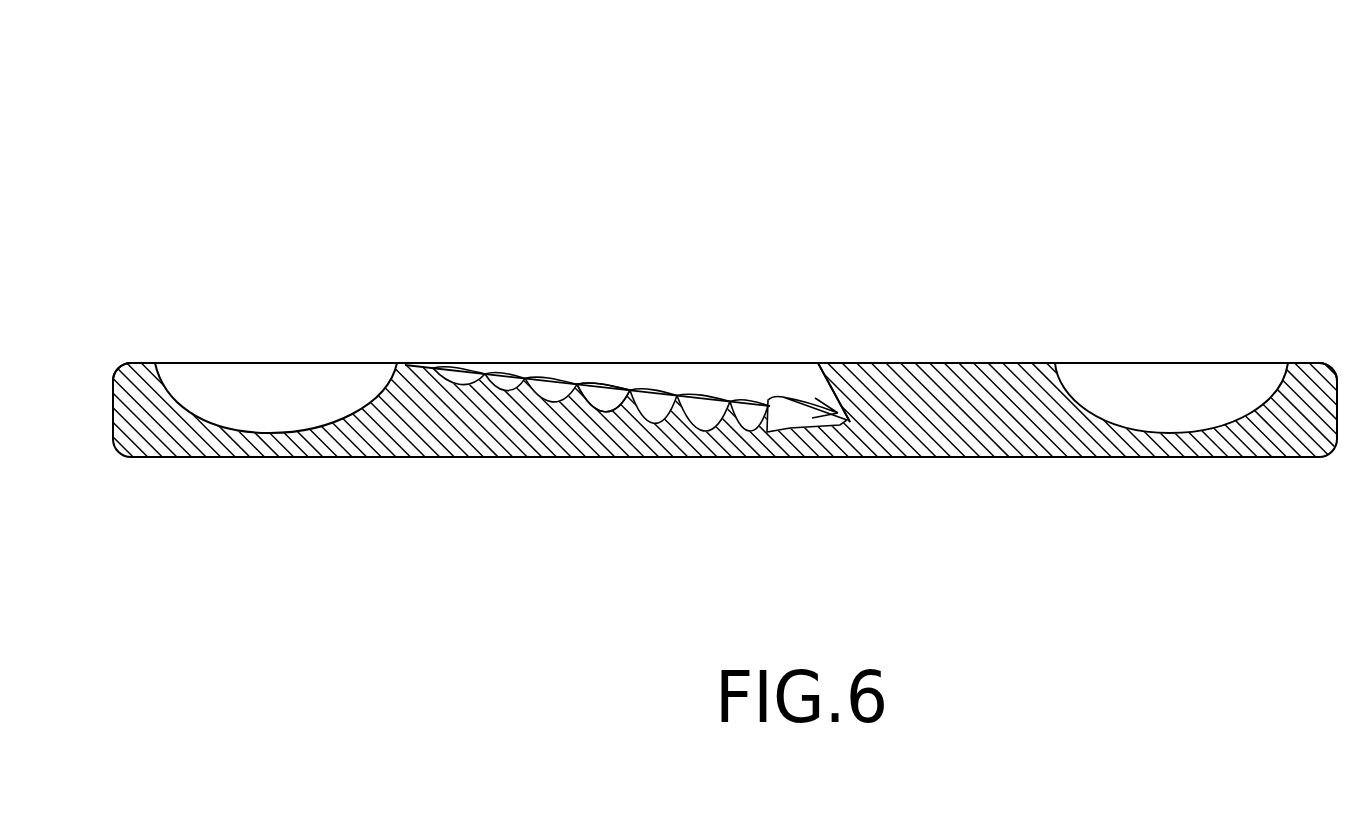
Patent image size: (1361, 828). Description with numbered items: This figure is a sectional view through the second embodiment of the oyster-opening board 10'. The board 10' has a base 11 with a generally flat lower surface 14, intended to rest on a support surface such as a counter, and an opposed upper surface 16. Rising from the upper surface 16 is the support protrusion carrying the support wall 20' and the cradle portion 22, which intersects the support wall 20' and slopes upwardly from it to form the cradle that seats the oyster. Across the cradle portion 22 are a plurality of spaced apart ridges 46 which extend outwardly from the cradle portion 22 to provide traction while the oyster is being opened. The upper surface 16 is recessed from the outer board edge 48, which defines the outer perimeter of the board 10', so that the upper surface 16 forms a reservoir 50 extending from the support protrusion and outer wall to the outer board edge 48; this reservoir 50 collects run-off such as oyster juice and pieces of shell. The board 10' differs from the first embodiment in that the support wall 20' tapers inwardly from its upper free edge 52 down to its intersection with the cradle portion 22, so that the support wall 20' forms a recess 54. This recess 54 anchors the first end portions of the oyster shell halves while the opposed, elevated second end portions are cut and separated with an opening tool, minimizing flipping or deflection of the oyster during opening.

The board 10' is at (682, 265).
The base 11 is at (113, 412).
The lower surface 14 is at (352, 458).
The upper surface 16 is at (267, 428).
The support wall 20' is at (627, 363).
The cradle portion 22 is at (617, 385).
The ridges 46 is at (572, 395).
The outer board edge 48 is at (1297, 365).
The reservoir 50 is at (1165, 410).
The upper free edge 52 is at (815, 372).
The recess 54 is at (768, 435).